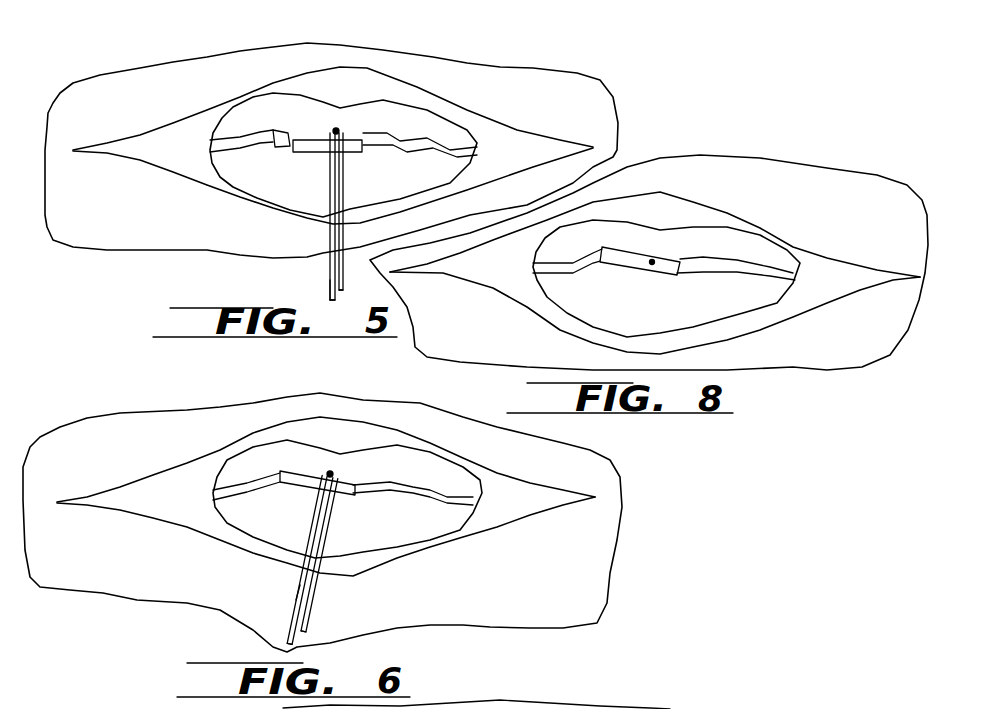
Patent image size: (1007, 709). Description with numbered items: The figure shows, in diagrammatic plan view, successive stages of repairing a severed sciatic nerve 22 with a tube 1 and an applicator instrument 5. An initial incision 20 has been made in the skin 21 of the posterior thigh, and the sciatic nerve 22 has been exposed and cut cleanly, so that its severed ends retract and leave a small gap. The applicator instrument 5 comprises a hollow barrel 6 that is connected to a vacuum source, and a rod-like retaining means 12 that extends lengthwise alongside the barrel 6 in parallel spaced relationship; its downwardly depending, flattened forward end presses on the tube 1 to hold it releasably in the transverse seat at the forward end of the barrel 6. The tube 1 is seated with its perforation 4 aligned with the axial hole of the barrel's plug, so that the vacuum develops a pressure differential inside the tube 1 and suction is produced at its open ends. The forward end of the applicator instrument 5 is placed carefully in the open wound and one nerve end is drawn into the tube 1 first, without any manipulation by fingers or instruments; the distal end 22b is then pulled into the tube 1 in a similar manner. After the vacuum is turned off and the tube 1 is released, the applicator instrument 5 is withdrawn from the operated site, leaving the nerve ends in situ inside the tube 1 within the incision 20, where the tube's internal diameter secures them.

In FIG. 5, the tube 1 is at (353, 140).
In FIG. 8, the tube 1 is at (617, 260).
In FIG. 6, the tube 1 is at (302, 487).
In FIG. 8, the perforation 4 is at (652, 262).
In FIG. 5, the applicator instrument 5 is at (330, 285).
In FIG. 6, the applicator instrument 5 is at (294, 578).
In FIG. 5, the hollow barrel 6 is at (327, 270).
In FIG. 6, the hollow barrel 6 is at (330, 540).
In FIG. 5, the retaining means 12 is at (343, 298).
In FIG. 6, the retaining means 12 is at (330, 635).
In FIG. 5, the incision 20 is at (497, 130).
In FIG. 8, the incision 20 is at (763, 227).
In FIG. 6, the incision 20 is at (517, 480).
In FIG. 5, the skin 21 is at (587, 97).
In FIG. 8, the skin 21 is at (817, 183).
In FIG. 6, the skin 21 is at (603, 472).
In FIG. 5, the sciatic nerve 22 is at (407, 140).
In FIG. 8, the sciatic nerve 22 is at (753, 270).
In FIG. 6, the sciatic nerve 22 is at (418, 490).
In FIG. 5, the distal end 22b is at (276, 136).